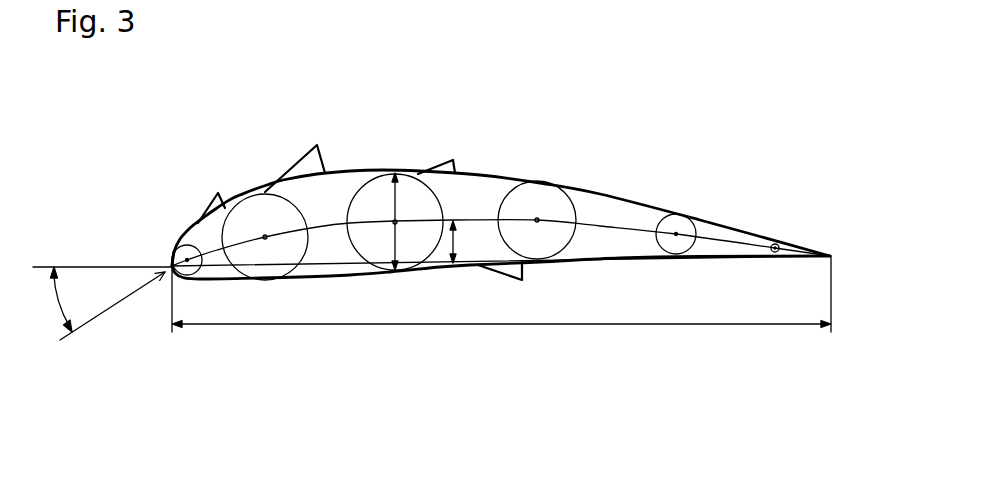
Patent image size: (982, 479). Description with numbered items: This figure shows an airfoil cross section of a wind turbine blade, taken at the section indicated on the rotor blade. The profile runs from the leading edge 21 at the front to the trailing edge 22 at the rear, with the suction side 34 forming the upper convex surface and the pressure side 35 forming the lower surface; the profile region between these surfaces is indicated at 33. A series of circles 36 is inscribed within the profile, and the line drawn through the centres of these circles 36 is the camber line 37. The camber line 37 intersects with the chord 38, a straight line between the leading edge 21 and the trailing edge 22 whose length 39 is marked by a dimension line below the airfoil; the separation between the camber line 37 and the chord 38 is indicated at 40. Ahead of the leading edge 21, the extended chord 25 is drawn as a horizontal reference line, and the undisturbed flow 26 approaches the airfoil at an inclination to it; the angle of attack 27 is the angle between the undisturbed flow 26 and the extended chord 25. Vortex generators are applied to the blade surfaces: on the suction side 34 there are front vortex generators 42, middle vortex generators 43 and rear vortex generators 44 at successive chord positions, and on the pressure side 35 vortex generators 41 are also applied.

The leading edge 21 is at (168, 265).
The trailing edge 22 is at (833, 257).
The extended chord 25 is at (72, 267).
The undisturbed flow 26 is at (100, 317).
The angle of attack 27 is at (60, 293).
The airfoil profile 33 is at (501, 219).
The suction side 34 is at (602, 192).
The pressure side 35 is at (288, 279).
The circles 36 is at (228, 222).
The camber line 37 is at (318, 225).
The chord 38 is at (332, 263).
The chord length 39 is at (455, 325).
The camber height 40 is at (458, 238).
The pressure side vortex generators 41 is at (523, 272).
The front vortex generators 42 is at (207, 196).
The middle vortex generators 43 is at (307, 158).
The rear vortex generators 44 is at (433, 162).